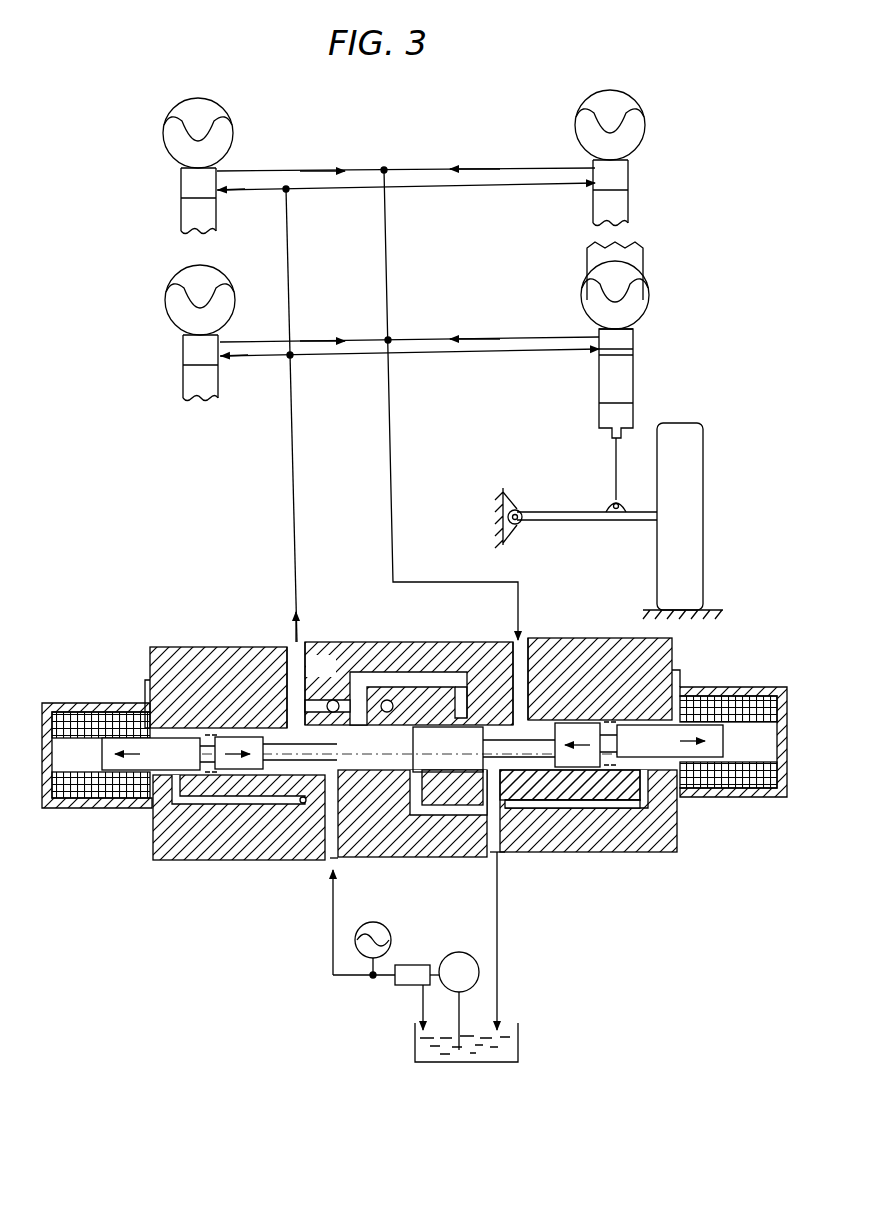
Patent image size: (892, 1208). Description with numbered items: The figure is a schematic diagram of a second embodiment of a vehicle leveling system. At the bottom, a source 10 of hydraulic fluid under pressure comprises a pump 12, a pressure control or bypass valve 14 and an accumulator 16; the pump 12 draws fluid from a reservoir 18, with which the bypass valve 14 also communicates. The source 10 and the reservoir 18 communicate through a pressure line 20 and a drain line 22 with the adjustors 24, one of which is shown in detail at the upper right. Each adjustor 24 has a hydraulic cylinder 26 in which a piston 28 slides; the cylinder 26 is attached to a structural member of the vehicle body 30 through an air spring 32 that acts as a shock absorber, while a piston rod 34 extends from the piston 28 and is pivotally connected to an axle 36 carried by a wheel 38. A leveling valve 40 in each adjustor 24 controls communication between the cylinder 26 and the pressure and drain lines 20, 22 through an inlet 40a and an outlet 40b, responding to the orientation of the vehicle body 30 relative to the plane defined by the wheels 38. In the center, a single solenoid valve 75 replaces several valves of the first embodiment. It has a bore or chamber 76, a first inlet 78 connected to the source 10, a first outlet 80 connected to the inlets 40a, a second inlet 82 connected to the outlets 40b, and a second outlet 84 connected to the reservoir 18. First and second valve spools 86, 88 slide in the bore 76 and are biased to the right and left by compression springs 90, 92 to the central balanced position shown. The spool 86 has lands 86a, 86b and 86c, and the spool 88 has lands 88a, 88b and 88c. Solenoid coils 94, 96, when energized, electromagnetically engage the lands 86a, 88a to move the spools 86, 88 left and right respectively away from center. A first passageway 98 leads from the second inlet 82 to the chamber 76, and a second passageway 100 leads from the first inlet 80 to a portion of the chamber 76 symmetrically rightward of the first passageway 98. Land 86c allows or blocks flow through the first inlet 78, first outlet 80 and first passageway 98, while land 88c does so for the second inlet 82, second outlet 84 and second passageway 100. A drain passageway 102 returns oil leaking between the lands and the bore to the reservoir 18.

The source of hydraulic fluid under pressure 10 is at (385, 1044).
The pump 12 is at (459, 952).
The pressure control or bypass valve 14 is at (412, 965).
The accumulator 16 is at (378, 925).
The reservoir 18 is at (520, 1052).
The pressure line 20 is at (336, 191).
The drain line 22 is at (494, 170).
The adjustor 24 is at (178, 200).
The hydraulic cylinder 26 is at (598, 388).
The piston 28 is at (598, 420).
The vehicle body 30 is at (640, 250).
The air spring 32 is at (642, 282).
The piston rod 34 is at (615, 471).
The axle 36 is at (574, 521).
The wheel 38 is at (684, 543).
The leveling valve 40 is at (622, 336).
The inlet 40a is at (597, 352).
The outlet 40b is at (597, 332).
The solenoid valve 75 is at (164, 644).
The bore or chamber 76 is at (240, 738).
The first inlet 78 is at (328, 862).
The first outlet 80 is at (301, 640).
The second inlet 82 is at (522, 637).
The second outlet 84 is at (500, 860).
The first valve spool 86 is at (264, 770).
The land 86a is at (150, 750).
The land 86b is at (228, 738).
The land 86c is at (380, 772).
The second valve spool 88 is at (530, 758).
The land 88a is at (700, 742).
The land 88b is at (576, 738).
The land 88c is at (446, 752).
The compression spring 90 is at (200, 777).
The compression spring 92 is at (650, 772).
The solenoid coil 94 is at (102, 809).
The solenoid coil 96 is at (730, 790).
The first passageway 98 is at (352, 700).
The second passageway 100 is at (460, 700).
The drain passageway 102 is at (290, 804).